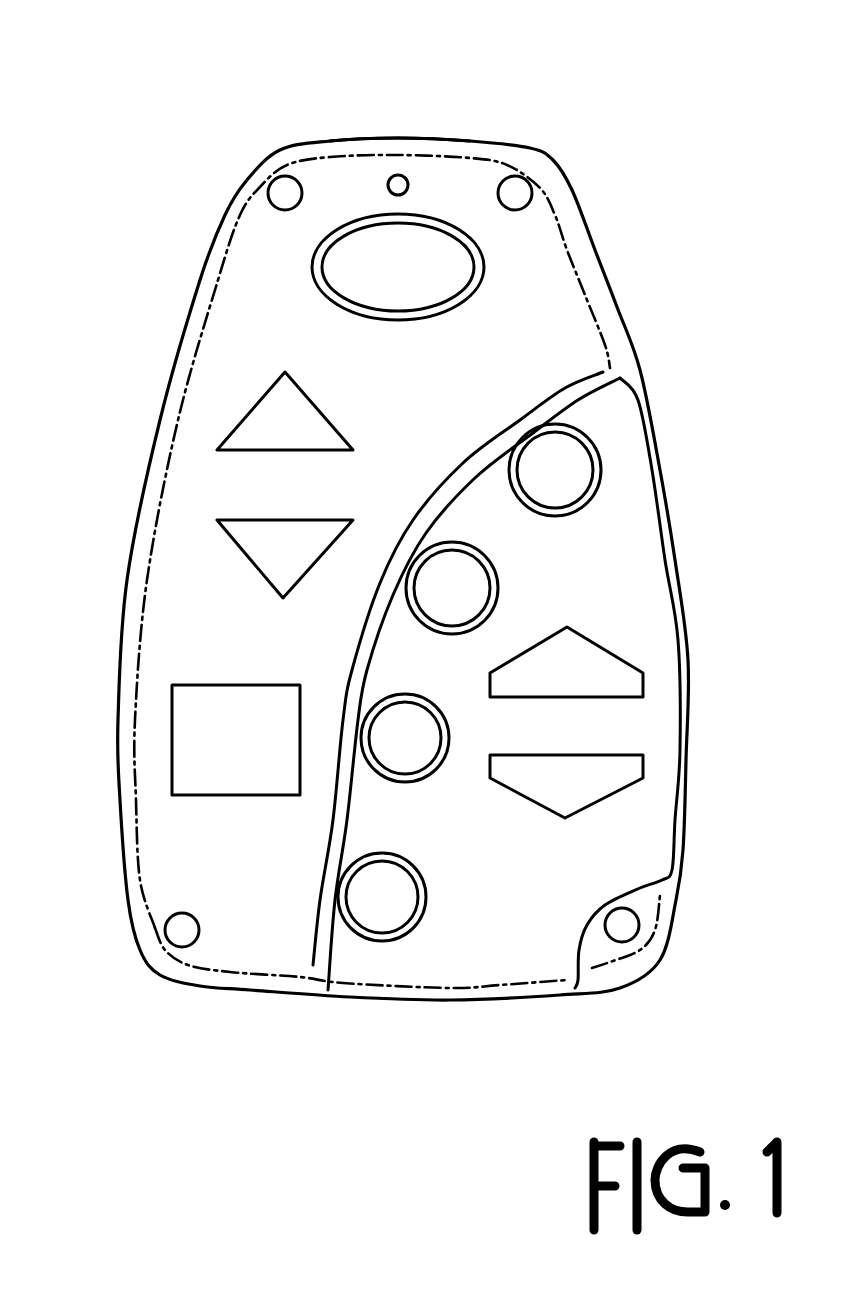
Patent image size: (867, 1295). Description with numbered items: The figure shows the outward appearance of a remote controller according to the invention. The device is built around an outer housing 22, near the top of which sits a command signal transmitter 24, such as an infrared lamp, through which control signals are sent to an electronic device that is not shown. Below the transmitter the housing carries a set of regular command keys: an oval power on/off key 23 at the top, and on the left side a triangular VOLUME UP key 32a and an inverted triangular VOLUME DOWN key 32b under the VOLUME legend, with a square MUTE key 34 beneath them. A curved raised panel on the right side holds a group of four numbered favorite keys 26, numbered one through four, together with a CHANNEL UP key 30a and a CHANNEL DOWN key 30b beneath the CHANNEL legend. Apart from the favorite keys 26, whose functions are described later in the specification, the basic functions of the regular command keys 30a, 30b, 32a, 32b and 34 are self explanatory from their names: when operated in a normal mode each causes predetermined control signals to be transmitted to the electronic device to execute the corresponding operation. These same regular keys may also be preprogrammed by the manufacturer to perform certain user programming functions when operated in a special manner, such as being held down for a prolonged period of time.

The outer housing 22 is at (145, 981).
The on/off button 23 is at (483, 250).
The command signal transmitter 24 is at (395, 138).
The favorite keys 26 is at (603, 462).
The CHANNEL UP key 30a is at (613, 657).
The CHANNEL DOWN key 30b is at (645, 765).
The VOLUME UP key 32a is at (262, 397).
The VOLUME DOWN key 32b is at (218, 528).
The MUTE key 34 is at (172, 728).